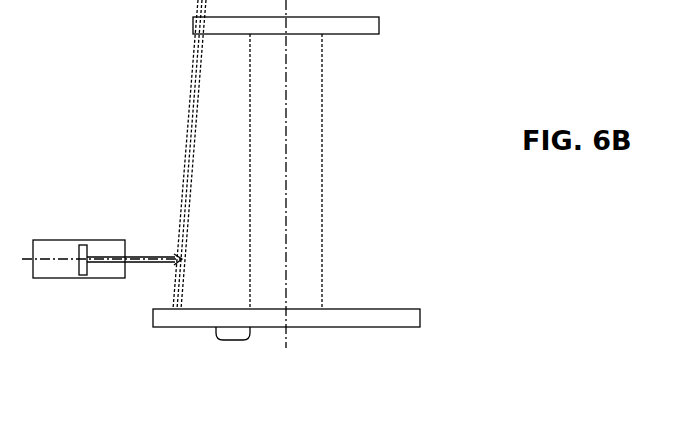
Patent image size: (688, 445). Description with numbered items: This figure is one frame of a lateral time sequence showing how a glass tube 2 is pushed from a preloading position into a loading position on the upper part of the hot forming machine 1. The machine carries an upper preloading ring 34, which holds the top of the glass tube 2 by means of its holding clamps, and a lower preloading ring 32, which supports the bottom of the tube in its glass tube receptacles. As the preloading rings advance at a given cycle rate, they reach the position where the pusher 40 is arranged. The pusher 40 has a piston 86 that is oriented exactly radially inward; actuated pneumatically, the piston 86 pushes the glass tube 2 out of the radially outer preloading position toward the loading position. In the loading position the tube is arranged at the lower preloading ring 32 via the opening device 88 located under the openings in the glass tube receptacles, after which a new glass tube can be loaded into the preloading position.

The hot forming machine 1 is at (359, 119).
The glass tube 2 is at (188, 113).
The lower preloading ring 32 is at (386, 308).
The upper preloading ring 34 is at (358, 28).
The pusher 40 is at (65, 279).
The piston 86 is at (144, 263).
The opening device 88 is at (229, 339).